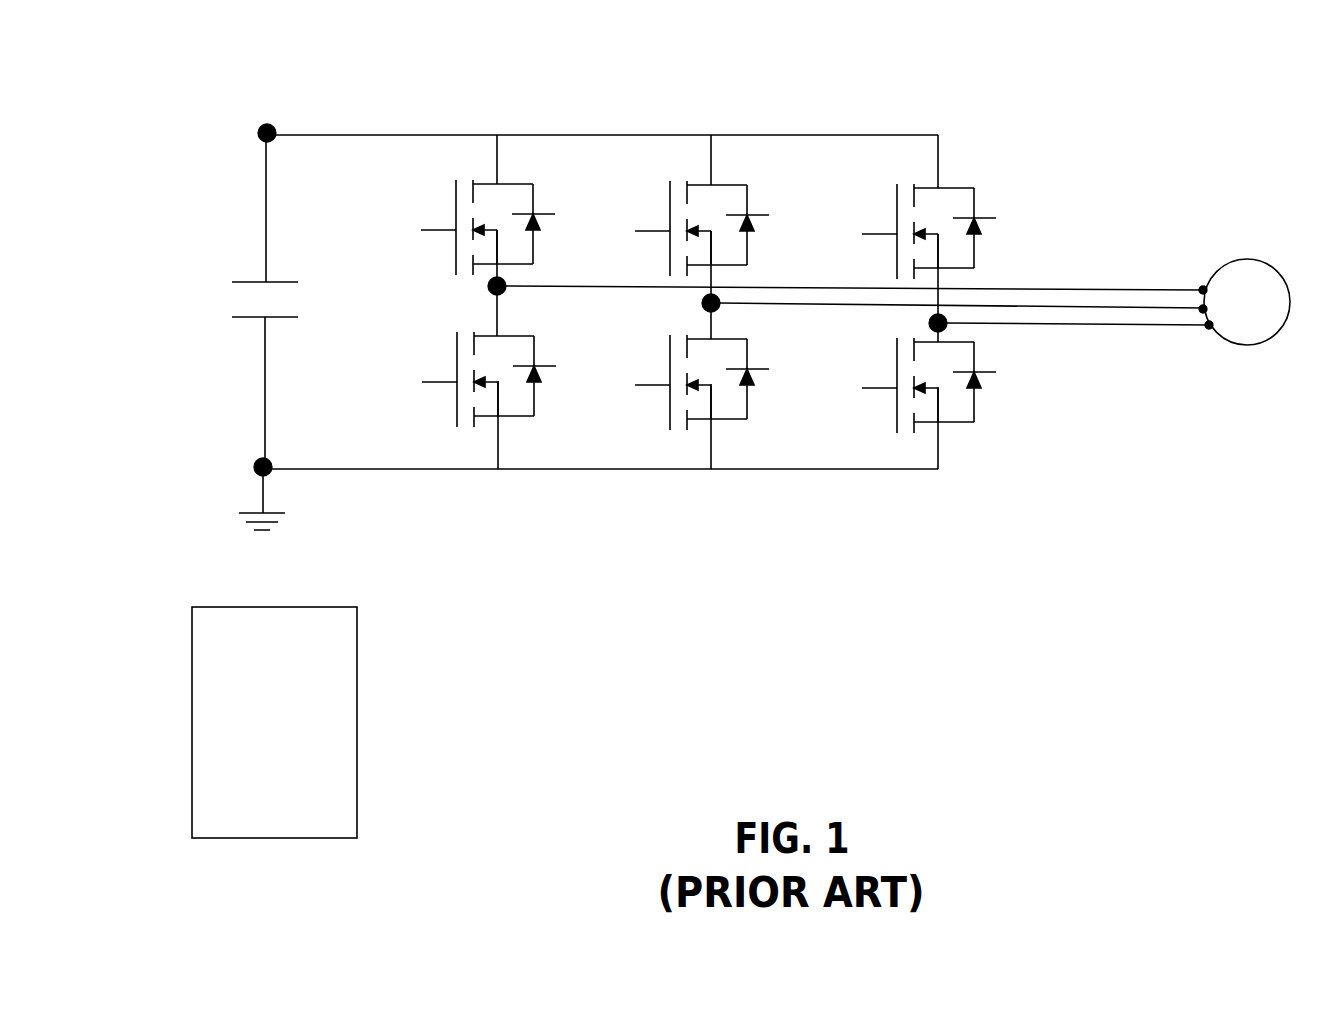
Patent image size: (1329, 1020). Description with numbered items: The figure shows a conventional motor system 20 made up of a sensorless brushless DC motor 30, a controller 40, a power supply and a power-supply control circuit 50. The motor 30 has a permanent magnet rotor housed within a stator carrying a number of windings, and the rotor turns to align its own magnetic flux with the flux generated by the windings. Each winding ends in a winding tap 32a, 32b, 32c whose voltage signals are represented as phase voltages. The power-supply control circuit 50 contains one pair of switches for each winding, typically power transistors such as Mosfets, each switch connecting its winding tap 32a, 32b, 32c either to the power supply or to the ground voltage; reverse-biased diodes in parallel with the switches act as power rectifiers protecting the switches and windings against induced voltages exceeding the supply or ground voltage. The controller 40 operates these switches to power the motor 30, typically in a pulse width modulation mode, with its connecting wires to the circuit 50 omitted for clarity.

The motor system 20 is at (262, 92).
The power-supply control circuit 50 is at (712, 102).
The sensorless BLDC motor 30 is at (1234, 262).
The winding tap 32a is at (1203, 288).
The winding tap 32b is at (1200, 308).
The winding tap 32c is at (1209, 325).
The controller 40 is at (192, 640).